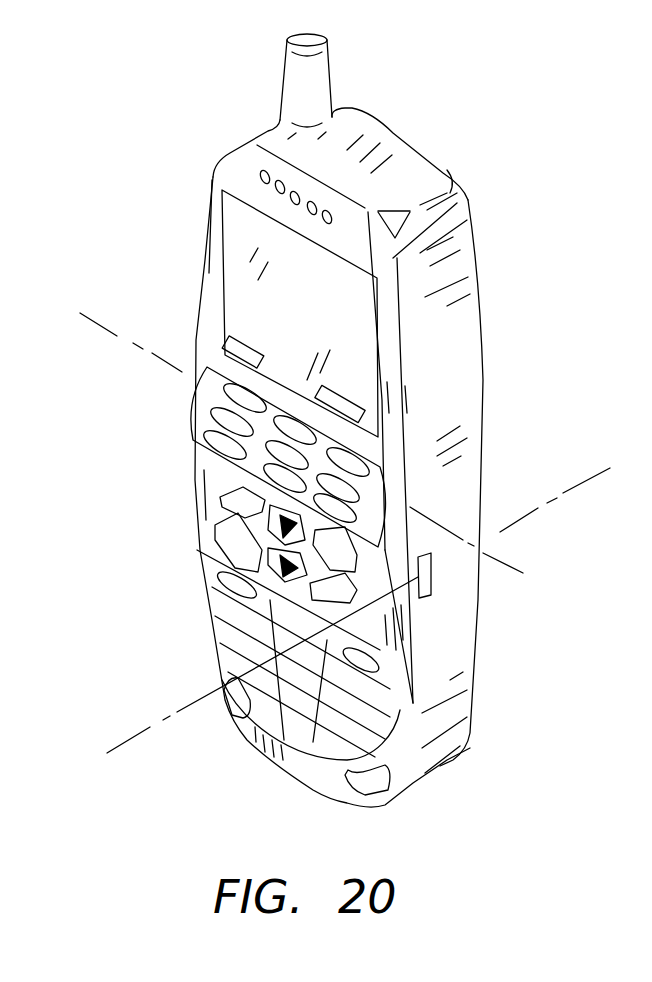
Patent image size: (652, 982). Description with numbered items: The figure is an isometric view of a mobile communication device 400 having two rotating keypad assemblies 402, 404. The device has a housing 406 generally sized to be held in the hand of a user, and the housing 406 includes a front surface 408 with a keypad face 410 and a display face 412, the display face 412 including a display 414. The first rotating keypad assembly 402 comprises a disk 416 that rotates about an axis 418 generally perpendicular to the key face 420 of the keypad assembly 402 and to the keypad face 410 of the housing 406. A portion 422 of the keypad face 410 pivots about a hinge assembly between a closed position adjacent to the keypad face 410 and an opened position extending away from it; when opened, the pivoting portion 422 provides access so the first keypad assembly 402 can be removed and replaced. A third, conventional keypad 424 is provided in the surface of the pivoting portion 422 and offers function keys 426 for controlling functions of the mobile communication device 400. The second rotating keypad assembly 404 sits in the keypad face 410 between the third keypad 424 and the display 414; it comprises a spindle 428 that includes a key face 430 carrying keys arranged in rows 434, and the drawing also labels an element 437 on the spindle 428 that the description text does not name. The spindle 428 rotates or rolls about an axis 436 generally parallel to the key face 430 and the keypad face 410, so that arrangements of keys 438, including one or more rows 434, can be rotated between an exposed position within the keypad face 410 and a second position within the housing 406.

The mobile communication device 400 is at (472, 108).
The first rotating keypad assembly 402 is at (393, 720).
The second rotating keypad assembly 404 is at (367, 500).
The housing 406 is at (478, 622).
The front surface 408 is at (400, 765).
The keypad face 410 is at (217, 653).
The display face 412 is at (204, 287).
The display 414 is at (372, 292).
The disk 416 is at (220, 633).
The axis 418 is at (500, 532).
The key face 420 is at (227, 680).
The pivoting portion 422 is at (210, 527).
The third keypad 424 is at (240, 494).
The function keys 426 is at (255, 498).
The spindle 428 is at (320, 482).
The key face 430 is at (298, 452).
The rows 434 is at (243, 390).
The axis 436 is at (160, 353).
The send key 437 is at (290, 428).
The arrangements of keys 438 is at (237, 320).